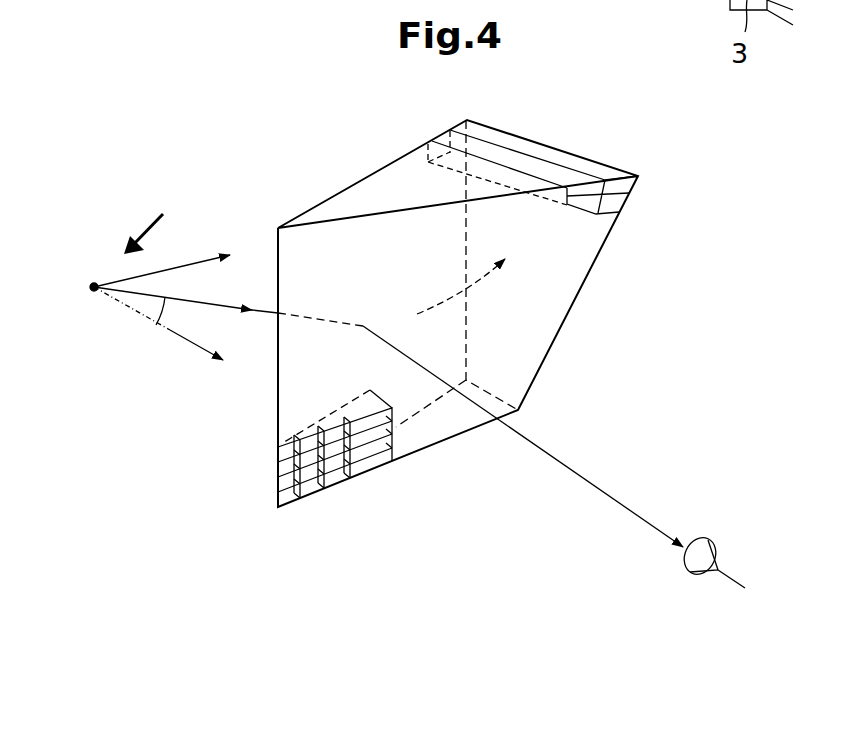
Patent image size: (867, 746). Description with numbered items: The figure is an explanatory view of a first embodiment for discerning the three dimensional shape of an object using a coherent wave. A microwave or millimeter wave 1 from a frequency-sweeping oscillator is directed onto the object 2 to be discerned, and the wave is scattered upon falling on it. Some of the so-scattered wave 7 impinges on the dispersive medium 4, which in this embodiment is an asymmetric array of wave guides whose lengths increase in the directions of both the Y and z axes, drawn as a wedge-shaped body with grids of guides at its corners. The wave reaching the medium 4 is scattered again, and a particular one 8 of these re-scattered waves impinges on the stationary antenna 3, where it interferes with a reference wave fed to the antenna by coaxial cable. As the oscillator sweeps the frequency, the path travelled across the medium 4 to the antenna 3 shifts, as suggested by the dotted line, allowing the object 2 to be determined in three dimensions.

The microwave or millimeter wave 1 is at (147, 230).
The object 2 is at (95, 293).
The stationary antenna 3 is at (710, 567).
The dispersive medium 4 is at (586, 254).
The scattered wave 7 is at (158, 326).
The particular scattered wave 8 is at (600, 487).